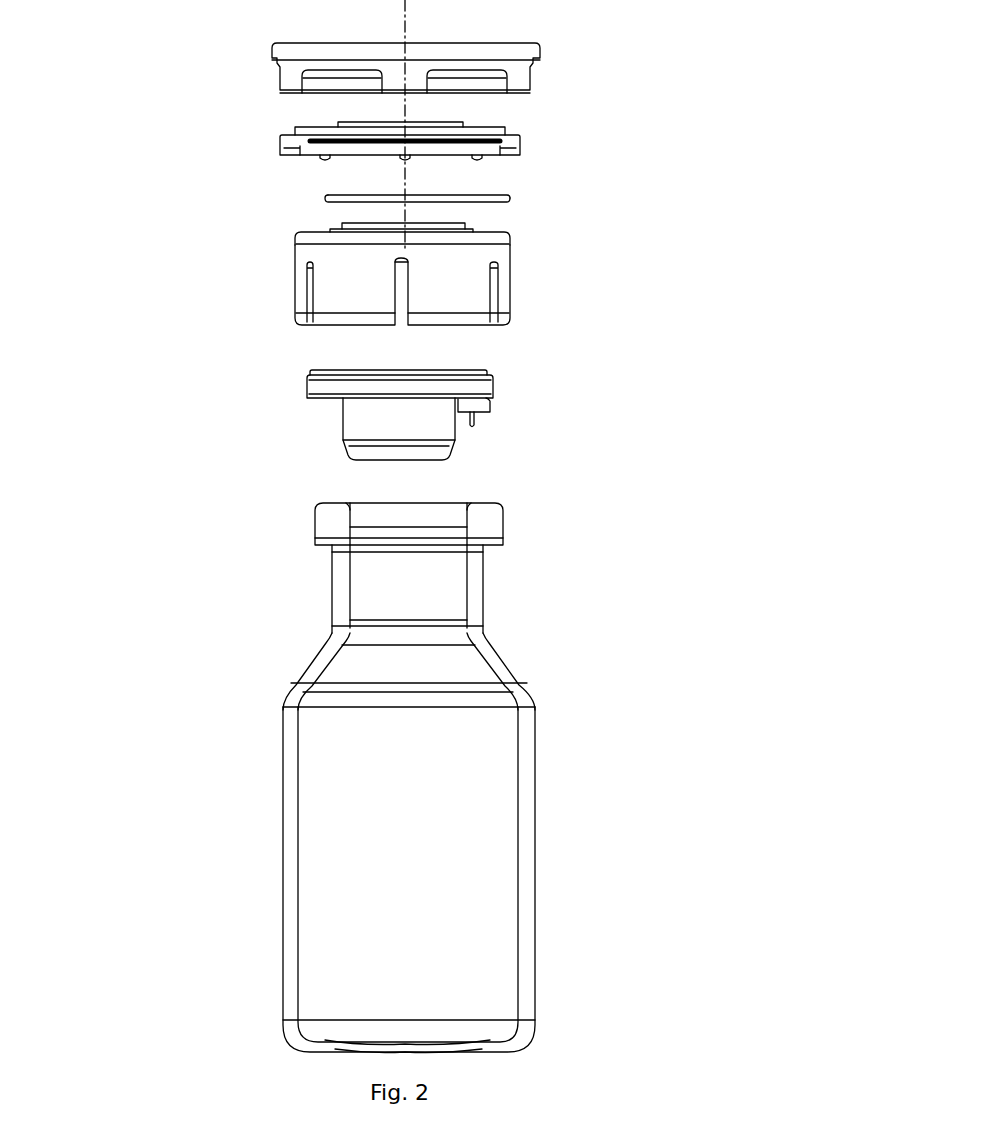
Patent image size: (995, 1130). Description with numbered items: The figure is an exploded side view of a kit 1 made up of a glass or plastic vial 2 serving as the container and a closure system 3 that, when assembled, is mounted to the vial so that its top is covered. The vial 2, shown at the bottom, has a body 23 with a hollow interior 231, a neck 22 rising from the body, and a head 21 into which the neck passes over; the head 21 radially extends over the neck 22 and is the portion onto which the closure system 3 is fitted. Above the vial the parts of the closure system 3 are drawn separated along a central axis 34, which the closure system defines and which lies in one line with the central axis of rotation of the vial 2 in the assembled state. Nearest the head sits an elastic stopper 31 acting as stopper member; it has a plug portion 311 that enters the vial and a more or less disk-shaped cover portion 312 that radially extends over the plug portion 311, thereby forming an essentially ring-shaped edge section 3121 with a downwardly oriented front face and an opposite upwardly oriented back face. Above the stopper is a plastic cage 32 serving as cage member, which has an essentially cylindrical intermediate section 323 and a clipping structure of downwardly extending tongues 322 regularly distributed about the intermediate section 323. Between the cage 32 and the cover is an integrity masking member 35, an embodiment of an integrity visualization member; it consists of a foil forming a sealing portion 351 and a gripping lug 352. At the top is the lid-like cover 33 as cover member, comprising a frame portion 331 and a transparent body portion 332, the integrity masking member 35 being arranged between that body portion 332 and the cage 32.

The kit 1 is at (245, 681).
The vial 2 is at (263, 822).
The head 21 is at (328, 528).
The neck 22 is at (478, 598).
The body 23 is at (528, 778).
The hollow interior 231 is at (500, 888).
The closure system 3 is at (587, 134).
The elastic stopper 31 is at (535, 416).
The plug portion 311 is at (368, 422).
The cover portion 312 is at (320, 389).
The edge section 3121 is at (486, 429).
The cage 32 is at (527, 294).
The tongues 322 is at (340, 297).
The intermediate section 323 is at (318, 248).
The cover 33 is at (262, 43).
The frame portion 331 is at (323, 60).
The body portion 332 is at (525, 142).
The central axis 34 is at (408, 15).
The integrity masking member 35 is at (303, 203).
The sealing portion 351 is at (443, 203).
The gripping lug 352 is at (512, 198).